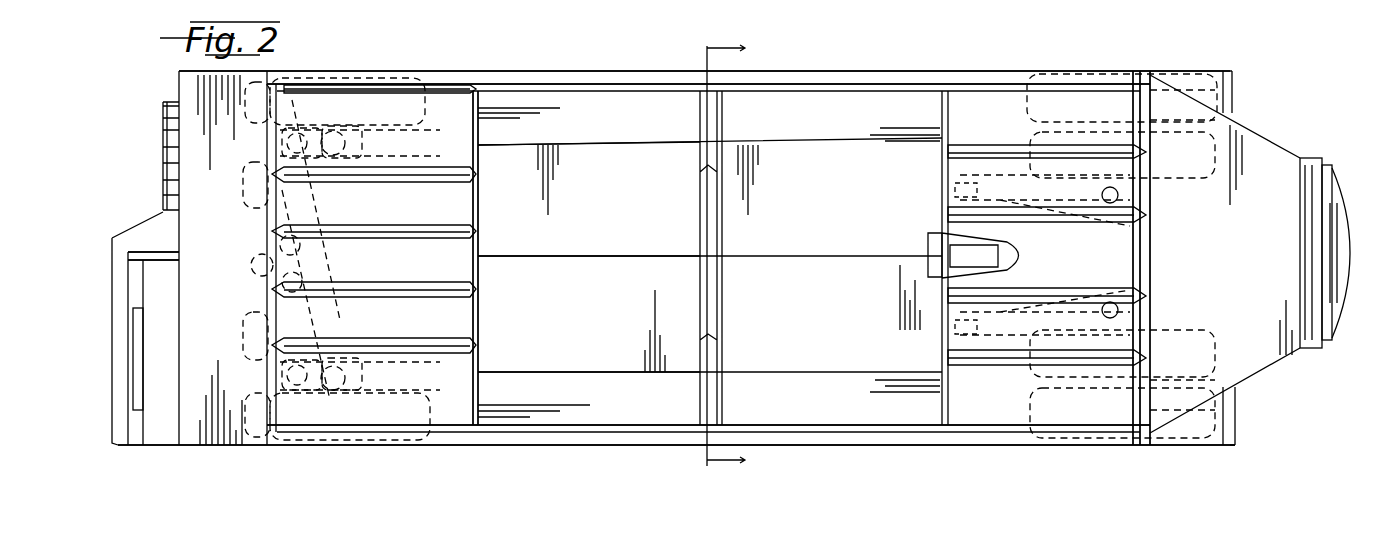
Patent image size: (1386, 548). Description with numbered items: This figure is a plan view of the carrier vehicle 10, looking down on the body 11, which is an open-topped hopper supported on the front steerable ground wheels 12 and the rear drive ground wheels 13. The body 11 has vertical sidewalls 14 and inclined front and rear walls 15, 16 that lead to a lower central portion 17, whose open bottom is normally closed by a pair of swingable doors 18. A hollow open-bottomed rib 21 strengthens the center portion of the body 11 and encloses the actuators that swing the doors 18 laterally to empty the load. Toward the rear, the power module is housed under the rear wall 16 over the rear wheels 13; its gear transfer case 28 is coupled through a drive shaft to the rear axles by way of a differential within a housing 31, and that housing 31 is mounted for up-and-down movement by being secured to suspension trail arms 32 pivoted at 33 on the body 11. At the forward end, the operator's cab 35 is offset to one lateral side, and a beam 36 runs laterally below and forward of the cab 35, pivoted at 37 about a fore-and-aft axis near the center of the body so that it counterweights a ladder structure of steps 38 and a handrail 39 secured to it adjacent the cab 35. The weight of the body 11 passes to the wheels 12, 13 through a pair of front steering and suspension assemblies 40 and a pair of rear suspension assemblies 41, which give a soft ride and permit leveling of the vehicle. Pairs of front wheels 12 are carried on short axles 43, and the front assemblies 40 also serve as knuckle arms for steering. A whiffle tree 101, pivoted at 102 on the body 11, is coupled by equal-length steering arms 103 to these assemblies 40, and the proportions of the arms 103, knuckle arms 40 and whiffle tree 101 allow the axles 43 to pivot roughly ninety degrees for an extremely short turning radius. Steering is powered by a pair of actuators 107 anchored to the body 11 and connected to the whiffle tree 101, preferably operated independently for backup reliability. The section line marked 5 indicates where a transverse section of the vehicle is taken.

The section line 5- 5 is at (714, 256).
The carrier vehicle 10 is at (1226, 72).
The body 11 is at (812, 72).
The front steerable ground wheels 12 is at (427, 92).
The rear drive ground wheels 13 is at (1028, 78).
The vertical sidewalls 14 is at (565, 88).
The inclined front wall 15 is at (480, 250).
The inclined rear wall 16 is at (960, 398).
The lower central portion 17 is at (942, 160).
The swingable doors 18 is at (618, 192).
The hollow open-bottomed rib 21 is at (722, 290).
The gear transfer case 28 is at (930, 252).
The differential housing 31 is at (1150, 232).
The suspension trail arms 32 is at (1005, 190).
The trail arm pivot 33 is at (950, 190).
The operator's cab 35 is at (133, 375).
The beam 36 is at (135, 232).
The beam pivot 37 is at (128, 270).
The steps 38 is at (165, 133).
The handrail 39 is at (162, 104).
The front steering and suspension assemblies 40 is at (322, 128).
The rear suspension assemblies 41 is at (1120, 187).
The short axles 43 is at (365, 158).
The whiffle tree 101 is at (335, 262).
The whiffle tree pivot 102 is at (262, 262).
The steering arms 103 is at (440, 185).
The steering actuators 107 is at (250, 188).